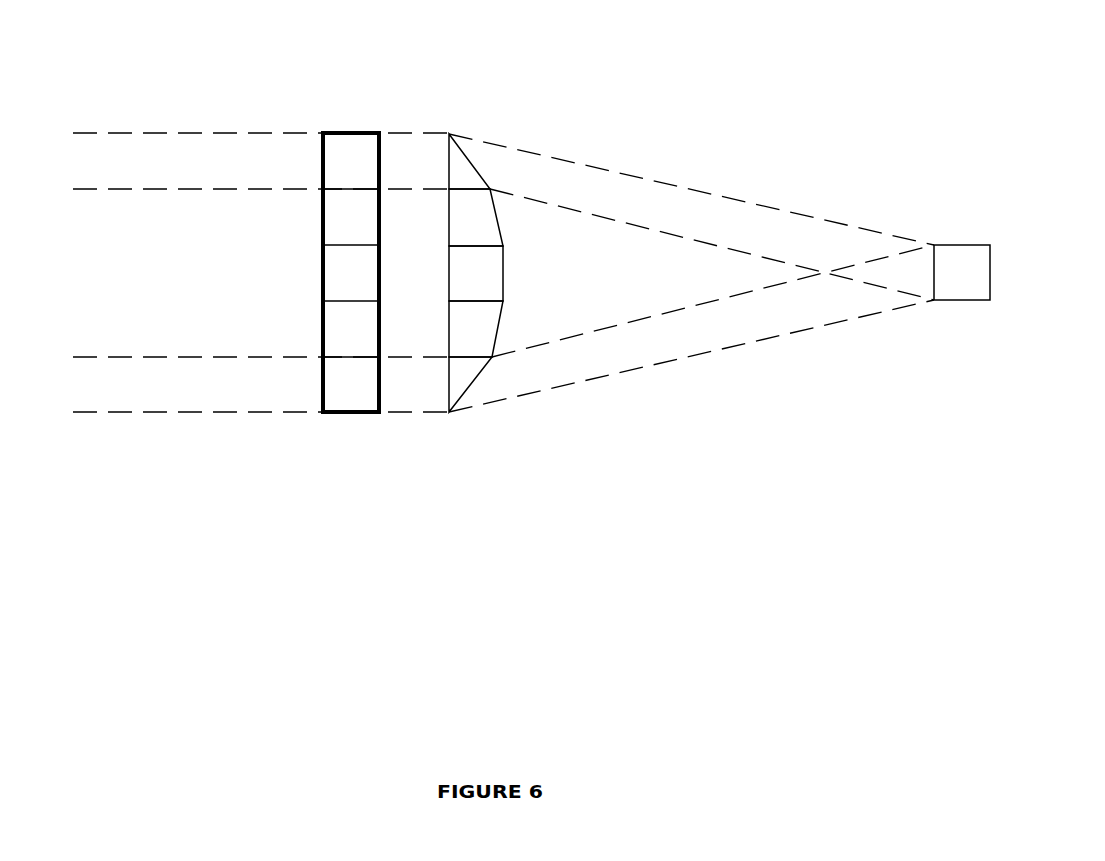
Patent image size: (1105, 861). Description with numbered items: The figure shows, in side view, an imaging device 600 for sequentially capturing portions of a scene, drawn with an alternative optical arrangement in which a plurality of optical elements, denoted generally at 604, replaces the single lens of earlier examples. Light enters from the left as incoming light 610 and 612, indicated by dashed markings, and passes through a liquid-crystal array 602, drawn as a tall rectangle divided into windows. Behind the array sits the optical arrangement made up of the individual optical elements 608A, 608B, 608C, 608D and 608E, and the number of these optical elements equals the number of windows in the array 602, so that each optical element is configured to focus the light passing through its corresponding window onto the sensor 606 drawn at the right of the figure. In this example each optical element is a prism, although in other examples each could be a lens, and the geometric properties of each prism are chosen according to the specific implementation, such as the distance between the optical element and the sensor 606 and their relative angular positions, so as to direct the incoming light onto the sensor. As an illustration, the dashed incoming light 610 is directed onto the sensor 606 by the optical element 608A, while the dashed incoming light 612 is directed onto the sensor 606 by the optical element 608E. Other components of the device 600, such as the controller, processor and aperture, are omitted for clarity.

The imaging device 600 is at (594, 111).
The liquid-crystal array 602 is at (369, 104).
The optical elements 604 is at (513, 297).
The sensor 606 is at (952, 245).
The optical element 608A is at (474, 164).
The optical element 608B is at (503, 222).
The optical element 608C is at (503, 274).
The optical element 608D is at (497, 332).
The optical element 608E is at (448, 412).
The incoming light 610 is at (92, 132).
The incoming light 612 is at (240, 417).